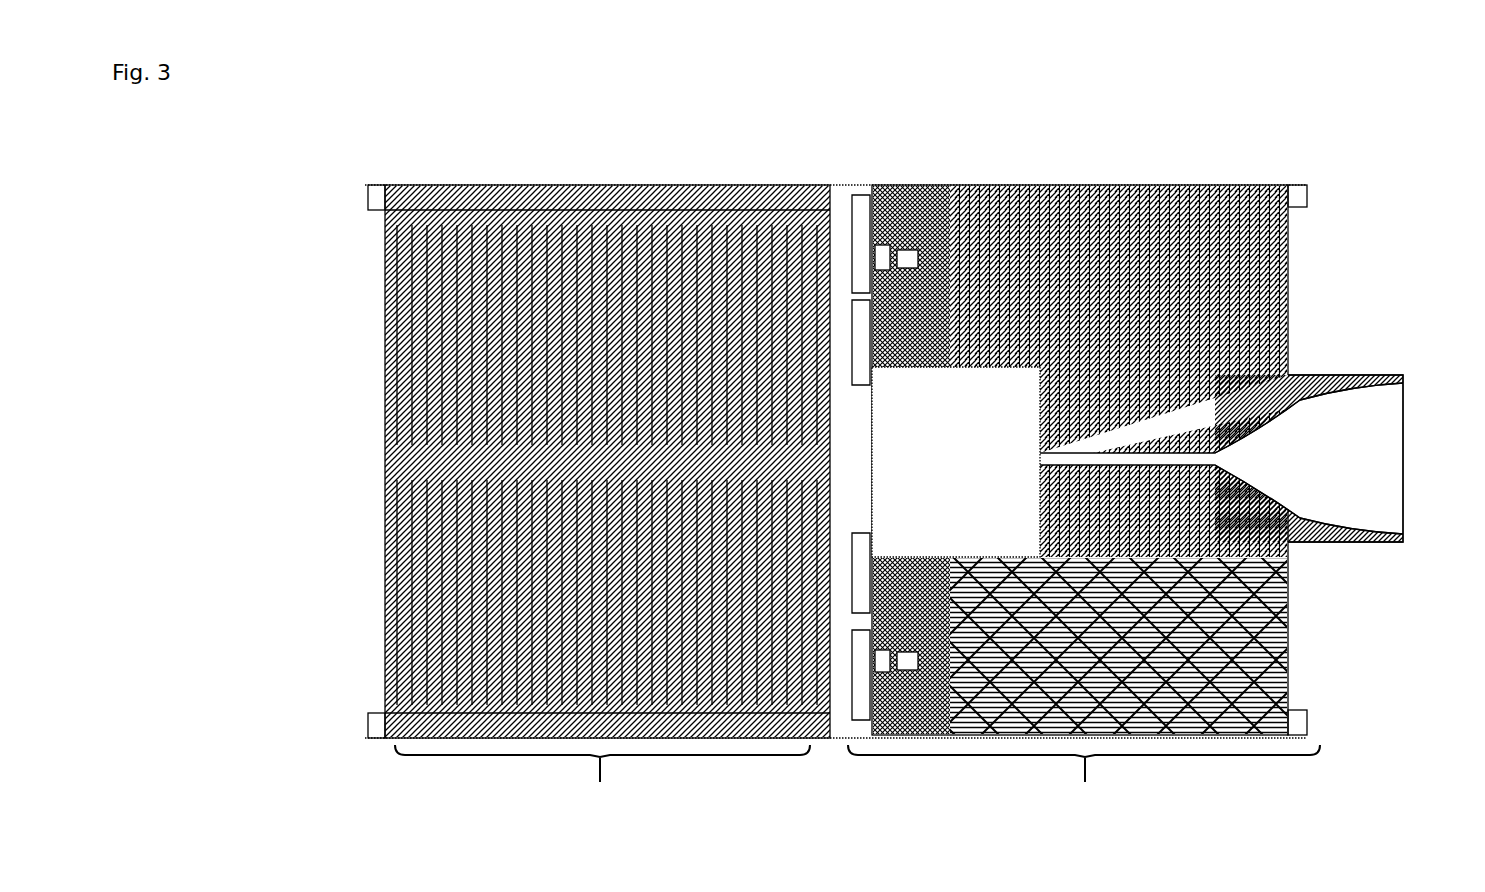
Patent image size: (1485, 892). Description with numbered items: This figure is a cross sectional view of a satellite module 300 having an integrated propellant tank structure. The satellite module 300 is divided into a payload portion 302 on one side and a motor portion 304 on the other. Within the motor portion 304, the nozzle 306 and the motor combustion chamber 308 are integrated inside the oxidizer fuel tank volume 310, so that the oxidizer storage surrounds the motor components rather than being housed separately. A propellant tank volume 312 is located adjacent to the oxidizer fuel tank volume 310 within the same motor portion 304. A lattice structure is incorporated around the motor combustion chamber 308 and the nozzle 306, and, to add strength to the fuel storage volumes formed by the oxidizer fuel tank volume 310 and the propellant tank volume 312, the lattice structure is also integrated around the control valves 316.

The satellite module 300 is at (285, 240).
The payload portion 302 is at (599, 502).
The motor portion 304 is at (1084, 502).
The nozzle 306 is at (1375, 440).
The motor combustion chamber 308 is at (927, 430).
The oxidizer fuel tank volume 310 is at (1210, 245).
The propellant tank volume 312 is at (1232, 700).
The control valves 316 is at (905, 215).